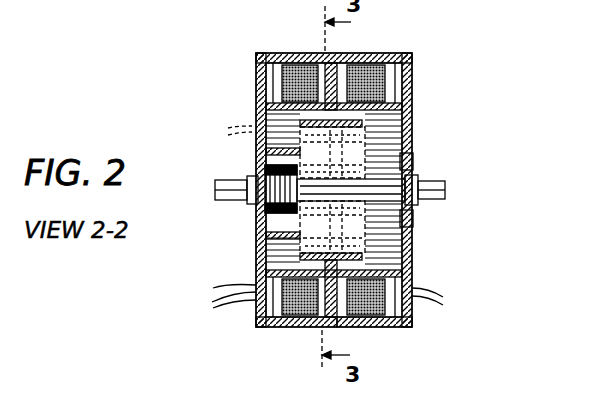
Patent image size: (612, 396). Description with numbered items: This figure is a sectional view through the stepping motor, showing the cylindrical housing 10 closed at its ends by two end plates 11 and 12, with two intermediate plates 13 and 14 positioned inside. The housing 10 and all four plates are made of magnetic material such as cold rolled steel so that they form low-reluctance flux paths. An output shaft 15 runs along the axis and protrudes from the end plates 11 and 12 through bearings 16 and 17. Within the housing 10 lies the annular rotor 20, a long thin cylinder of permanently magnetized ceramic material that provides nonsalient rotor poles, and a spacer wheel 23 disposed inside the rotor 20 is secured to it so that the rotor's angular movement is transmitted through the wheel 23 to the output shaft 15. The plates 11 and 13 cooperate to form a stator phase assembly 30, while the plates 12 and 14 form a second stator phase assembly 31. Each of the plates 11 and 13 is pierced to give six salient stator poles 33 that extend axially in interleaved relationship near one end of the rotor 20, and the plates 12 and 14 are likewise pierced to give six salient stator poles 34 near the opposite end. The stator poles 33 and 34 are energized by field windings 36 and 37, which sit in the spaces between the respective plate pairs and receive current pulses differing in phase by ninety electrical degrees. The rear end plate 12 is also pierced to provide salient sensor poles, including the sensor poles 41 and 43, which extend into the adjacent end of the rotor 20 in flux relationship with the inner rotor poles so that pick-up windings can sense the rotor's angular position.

The cylindrical housing 10 is at (390, 55).
The end plate 11 is at (411, 63).
The end plate 12 is at (258, 67).
The intermediate plate 13 is at (343, 328).
The intermediate plate 14 is at (320, 323).
The output shaft 15 is at (440, 180).
The bearing 16 is at (413, 178).
The bearing 17 is at (247, 176).
The annular rotor 20 is at (365, 228).
The spacer wheel 23 is at (378, 153).
The stator phase assembly 30 is at (412, 275).
The stator phase assembly 31 is at (290, 263).
The salient stator poles 33 is at (408, 119).
The salient stator poles 34 is at (275, 53).
The field winding 36 is at (340, 47).
The field winding 37 is at (310, 53).
The salient sensor pole 41 is at (365, 200).
The salient sensor pole 43 is at (283, 127).